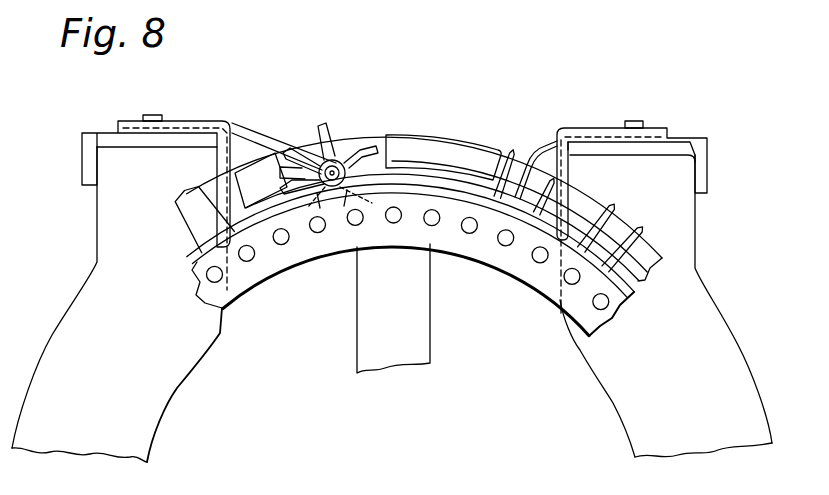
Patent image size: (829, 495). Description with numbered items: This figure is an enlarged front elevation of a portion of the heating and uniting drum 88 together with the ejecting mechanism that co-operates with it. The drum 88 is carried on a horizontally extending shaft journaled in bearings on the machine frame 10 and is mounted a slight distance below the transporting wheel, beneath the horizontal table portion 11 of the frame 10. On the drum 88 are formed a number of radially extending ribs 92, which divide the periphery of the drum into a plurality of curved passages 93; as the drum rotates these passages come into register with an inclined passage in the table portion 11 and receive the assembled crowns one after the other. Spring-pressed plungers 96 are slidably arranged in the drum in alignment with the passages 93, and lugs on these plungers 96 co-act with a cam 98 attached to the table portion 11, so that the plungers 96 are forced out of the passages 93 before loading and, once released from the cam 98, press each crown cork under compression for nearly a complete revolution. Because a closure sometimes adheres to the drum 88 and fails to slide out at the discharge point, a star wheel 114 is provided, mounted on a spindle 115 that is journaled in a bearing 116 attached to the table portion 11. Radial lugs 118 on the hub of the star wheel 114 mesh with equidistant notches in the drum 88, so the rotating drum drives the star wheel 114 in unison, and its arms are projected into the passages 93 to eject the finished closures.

The frame 10 is at (93, 236).
The horizontal table portion 11 is at (112, 137).
The heating and uniting drum 88 is at (617, 225).
The radially extending ribs 92 is at (640, 235).
The curved passages 93 is at (617, 252).
The spring-pressed plungers 96 is at (500, 244).
The cam 98 is at (427, 187).
The star wheel 114 is at (327, 127).
The spindle 115 is at (337, 168).
The bearing 116 is at (300, 152).
The radial lugs 118 is at (297, 170).